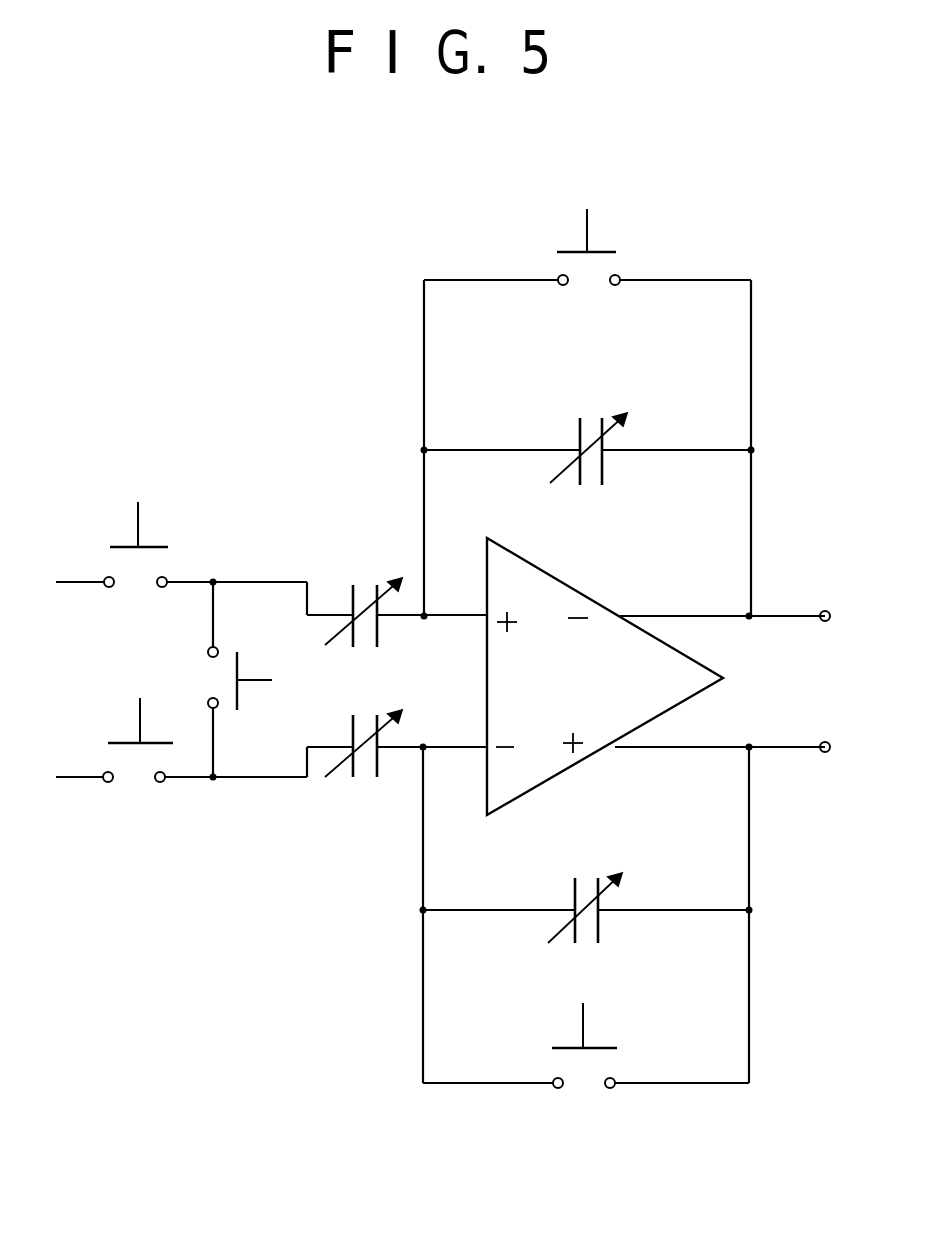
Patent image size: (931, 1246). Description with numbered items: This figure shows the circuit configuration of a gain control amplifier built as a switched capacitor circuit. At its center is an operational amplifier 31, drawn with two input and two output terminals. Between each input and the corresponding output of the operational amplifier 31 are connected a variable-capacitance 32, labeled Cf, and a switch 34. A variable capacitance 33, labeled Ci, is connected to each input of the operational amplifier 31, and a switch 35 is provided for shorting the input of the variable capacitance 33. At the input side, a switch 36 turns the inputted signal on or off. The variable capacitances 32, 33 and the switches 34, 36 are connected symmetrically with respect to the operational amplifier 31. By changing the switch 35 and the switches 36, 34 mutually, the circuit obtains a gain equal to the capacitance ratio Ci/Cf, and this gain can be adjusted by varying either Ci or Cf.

The operational amplifier 31 is at (568, 583).
The variable-capacitance 32 is at (569, 436).
The variable capacitance 33 is at (345, 597).
The switch 34 is at (569, 245).
The switch 35 is at (233, 715).
The switch 36 is at (153, 533).